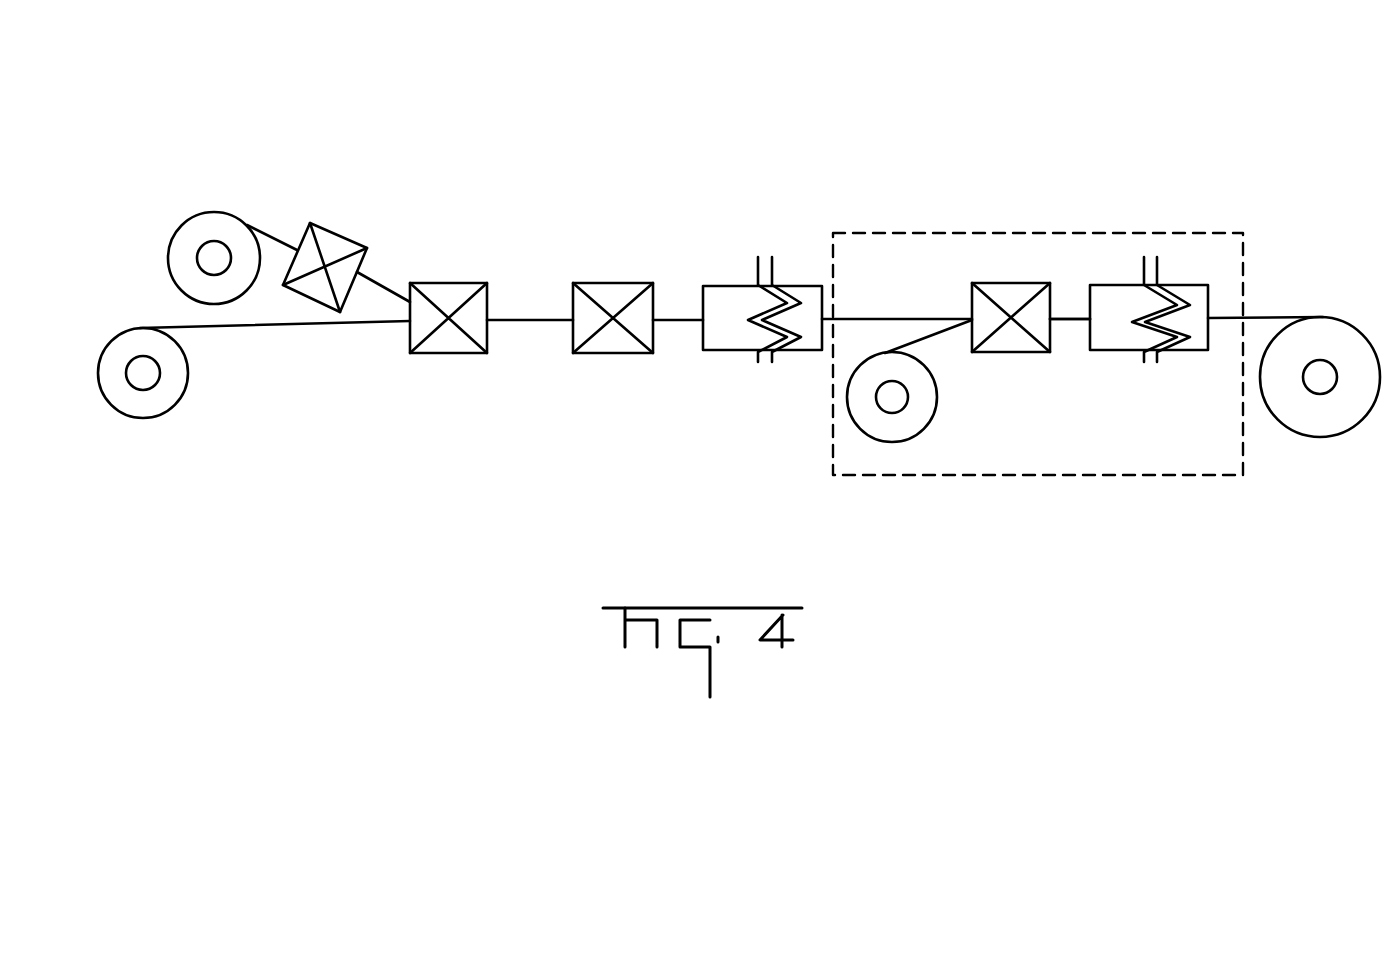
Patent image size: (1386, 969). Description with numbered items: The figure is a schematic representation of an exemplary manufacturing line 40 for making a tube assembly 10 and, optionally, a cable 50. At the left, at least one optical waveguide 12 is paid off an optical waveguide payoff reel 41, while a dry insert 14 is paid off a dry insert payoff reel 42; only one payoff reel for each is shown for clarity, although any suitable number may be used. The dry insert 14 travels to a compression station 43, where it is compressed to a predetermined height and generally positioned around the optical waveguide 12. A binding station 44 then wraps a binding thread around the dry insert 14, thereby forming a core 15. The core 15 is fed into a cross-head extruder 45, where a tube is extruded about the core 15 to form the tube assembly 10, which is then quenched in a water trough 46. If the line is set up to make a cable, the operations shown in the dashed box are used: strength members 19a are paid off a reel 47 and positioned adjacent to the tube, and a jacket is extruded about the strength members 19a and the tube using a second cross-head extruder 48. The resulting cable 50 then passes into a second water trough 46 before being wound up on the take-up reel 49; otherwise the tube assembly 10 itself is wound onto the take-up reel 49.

The manufacturing line 40 is at (232, 143).
The dry insert payoff reel 42 is at (190, 222).
The optical waveguide payoff reel 41 is at (155, 402).
The dry insert 14 is at (268, 233).
The compression station 43 is at (343, 233).
The optical waveguide 12 is at (237, 330).
The binding station 44 is at (453, 283).
The core 15 is at (527, 321).
The cross-head extruder 45 is at (622, 283).
The tube assembly 10 is at (679, 317).
The water trough 46 is at (718, 353).
The cross-head extruder 48 is at (985, 285).
The reel 47 is at (925, 425).
The strength members 19a is at (937, 337).
The cable 50 is at (1072, 320).
The take-up reel 49 is at (1322, 418).